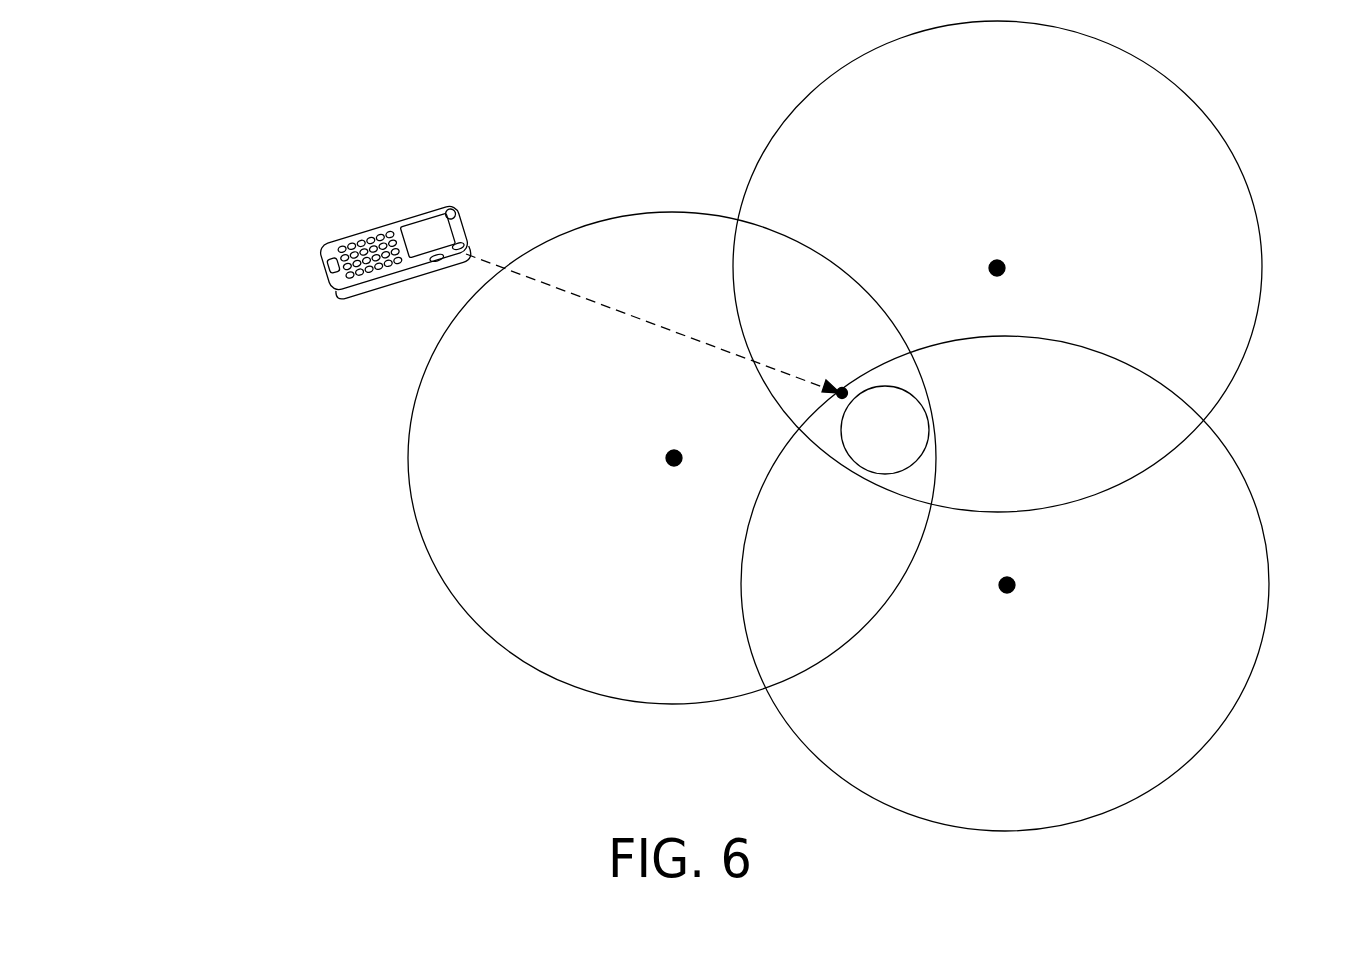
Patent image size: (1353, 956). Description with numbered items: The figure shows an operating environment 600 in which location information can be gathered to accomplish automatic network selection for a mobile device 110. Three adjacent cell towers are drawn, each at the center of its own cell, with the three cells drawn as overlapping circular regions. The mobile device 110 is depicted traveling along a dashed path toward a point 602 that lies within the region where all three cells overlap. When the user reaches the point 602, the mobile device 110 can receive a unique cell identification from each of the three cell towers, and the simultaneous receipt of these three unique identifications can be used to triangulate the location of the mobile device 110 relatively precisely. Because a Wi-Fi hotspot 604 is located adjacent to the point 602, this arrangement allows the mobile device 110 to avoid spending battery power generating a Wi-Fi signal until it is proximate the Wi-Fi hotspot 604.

The operating environment 600 is at (342, 54).
The mobile device 110 is at (372, 230).
The point 602 is at (841, 388).
The Wi-Fi hotspot 604 is at (904, 465).